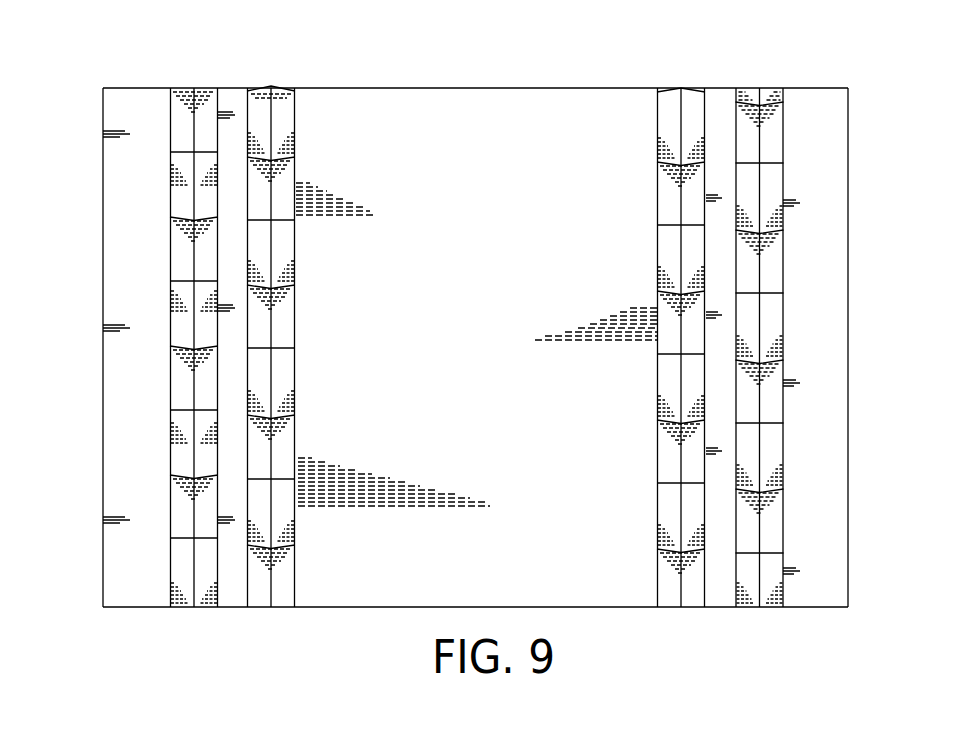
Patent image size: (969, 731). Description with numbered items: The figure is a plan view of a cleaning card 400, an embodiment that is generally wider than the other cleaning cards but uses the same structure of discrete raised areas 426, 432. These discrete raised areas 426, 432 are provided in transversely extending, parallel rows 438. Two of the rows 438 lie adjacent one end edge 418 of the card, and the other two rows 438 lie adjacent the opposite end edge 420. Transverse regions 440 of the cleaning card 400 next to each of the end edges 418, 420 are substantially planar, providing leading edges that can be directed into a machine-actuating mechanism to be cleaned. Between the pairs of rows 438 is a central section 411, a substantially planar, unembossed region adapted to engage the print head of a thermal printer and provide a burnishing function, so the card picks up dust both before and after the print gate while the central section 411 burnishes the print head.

The cleaning card 400 is at (738, 70).
The central section 411 is at (466, 373).
The end edge 418 is at (848, 357).
The end edge 420 is at (103, 352).
The discrete raised area 426 is at (290, 108).
The discrete raised area 432 is at (290, 185).
The rows 438 is at (194, 86).
The transverse regions 440 is at (124, 437).